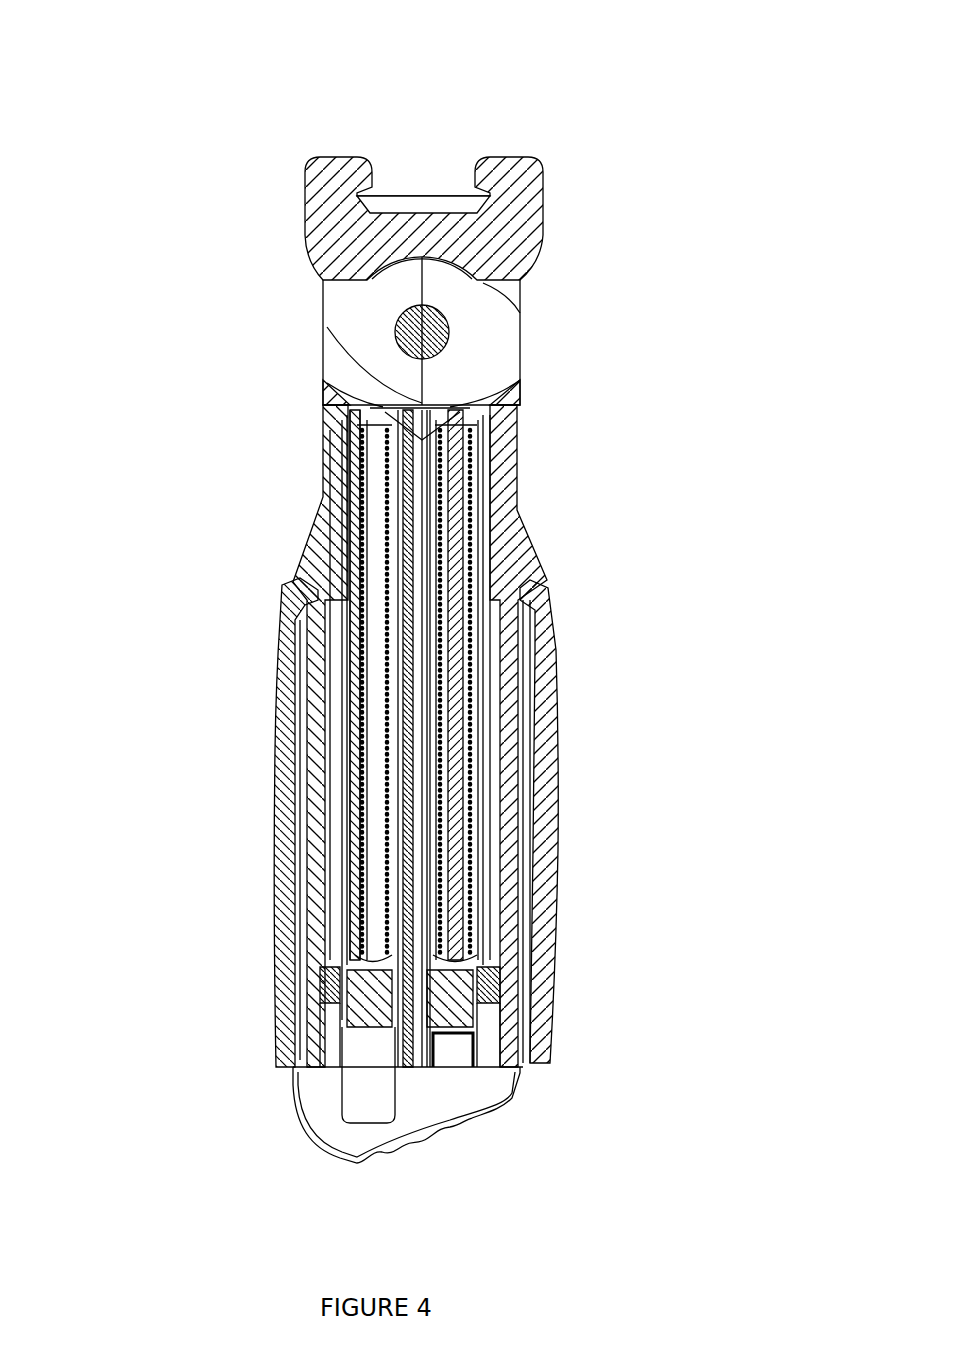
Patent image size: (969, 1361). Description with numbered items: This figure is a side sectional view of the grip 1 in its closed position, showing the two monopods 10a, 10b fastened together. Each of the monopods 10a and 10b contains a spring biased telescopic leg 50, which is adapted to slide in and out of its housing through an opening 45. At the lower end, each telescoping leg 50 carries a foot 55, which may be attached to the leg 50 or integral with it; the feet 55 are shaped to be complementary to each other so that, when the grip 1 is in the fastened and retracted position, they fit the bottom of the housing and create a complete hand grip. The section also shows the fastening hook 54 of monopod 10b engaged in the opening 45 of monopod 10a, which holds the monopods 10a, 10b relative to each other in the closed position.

The grip 1 is at (605, 223).
The telescopic leg 50 is at (385, 560).
The monopod 10a is at (553, 733).
The monopod 10b is at (270, 773).
The opening 45 is at (480, 1035).
The fastening hook 54 is at (447, 1053).
The foot 55 is at (315, 1095).